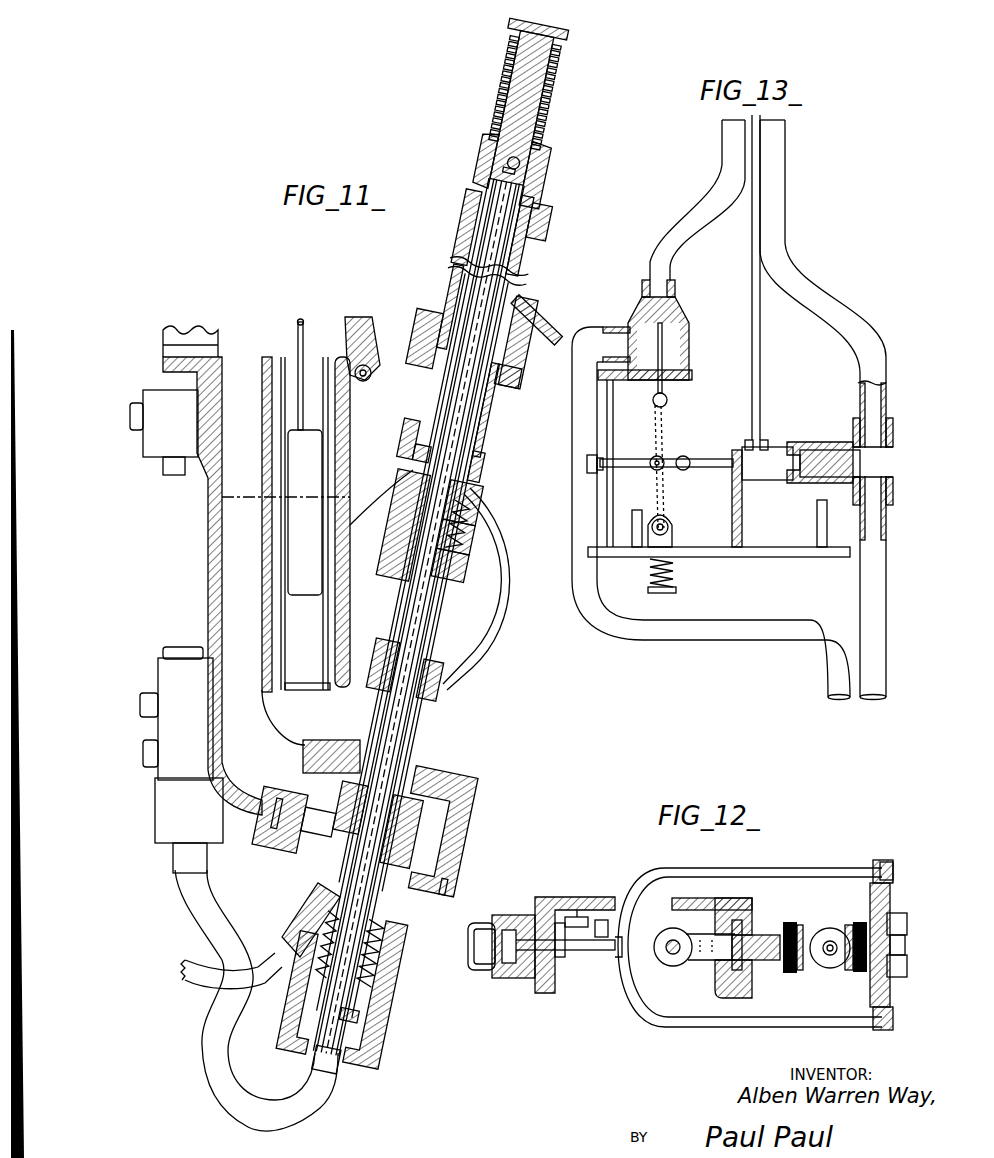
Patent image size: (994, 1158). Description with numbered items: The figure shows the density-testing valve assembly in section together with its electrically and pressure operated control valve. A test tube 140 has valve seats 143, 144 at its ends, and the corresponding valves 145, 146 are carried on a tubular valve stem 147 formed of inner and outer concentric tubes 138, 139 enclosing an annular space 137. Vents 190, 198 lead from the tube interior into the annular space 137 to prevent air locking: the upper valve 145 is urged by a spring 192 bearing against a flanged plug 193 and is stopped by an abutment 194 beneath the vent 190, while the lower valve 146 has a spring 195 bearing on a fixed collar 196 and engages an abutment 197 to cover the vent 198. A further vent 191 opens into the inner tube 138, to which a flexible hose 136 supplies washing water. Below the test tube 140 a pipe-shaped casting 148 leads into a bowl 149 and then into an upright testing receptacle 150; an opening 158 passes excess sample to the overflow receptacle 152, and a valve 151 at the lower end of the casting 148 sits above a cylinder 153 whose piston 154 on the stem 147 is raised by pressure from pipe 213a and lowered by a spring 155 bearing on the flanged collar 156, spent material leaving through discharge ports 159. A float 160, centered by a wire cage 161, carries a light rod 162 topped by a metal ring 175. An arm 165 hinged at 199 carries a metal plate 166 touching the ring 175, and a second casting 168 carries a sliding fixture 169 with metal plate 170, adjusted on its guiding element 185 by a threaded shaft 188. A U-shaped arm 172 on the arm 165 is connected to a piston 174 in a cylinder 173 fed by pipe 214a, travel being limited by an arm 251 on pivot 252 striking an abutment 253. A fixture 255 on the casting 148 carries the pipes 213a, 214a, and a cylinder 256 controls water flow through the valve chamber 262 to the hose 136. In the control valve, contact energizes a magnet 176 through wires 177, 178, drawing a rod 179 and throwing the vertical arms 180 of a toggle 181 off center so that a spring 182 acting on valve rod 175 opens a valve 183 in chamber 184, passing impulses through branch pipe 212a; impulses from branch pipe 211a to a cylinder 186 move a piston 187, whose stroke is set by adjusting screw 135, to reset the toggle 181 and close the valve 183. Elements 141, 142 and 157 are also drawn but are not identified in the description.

In FIG. 13, the adjusting screw 135 is at (587, 466).
In FIG. 11, the flexible hose 136 is at (208, 900).
In FIG. 11, the annular space 137 is at (530, 236).
In FIG. 11, the inner tube 138 is at (520, 268).
In FIG. 11, the outer tube 139 is at (525, 293).
In FIG. 11, the test tube 140 is at (500, 428).
In FIG. 11, the clamp block 141 is at (528, 341).
In FIG. 11, the sleeve 142 is at (445, 278).
In FIG. 11, the valve seat 143 is at (545, 205).
In FIG. 11, the valve seat 144 is at (478, 490).
In FIG. 11, the valve 145 is at (552, 157).
In FIG. 11, the valve 146 is at (478, 505).
In FIG. 11, the valve stem 147 is at (500, 400).
In FIG. 11, the casting 148 is at (190, 575).
In FIG. 11, the bowl 149 is at (331, 738).
In FIG. 11, the testing receptacle 150 is at (338, 465).
In FIG. 11, the valve 151 is at (445, 689).
In FIG. 11, the overflow receptacle 152 is at (215, 536).
In FIG. 11, the cylinder 153 is at (342, 794).
In FIG. 11, the piston 154 is at (417, 820).
In FIG. 11, the spring 155 is at (370, 960).
In FIG. 11, the collar 156 is at (350, 1017).
In FIG. 11, the flange 157 is at (445, 778).
In FIG. 11, the opening 158 is at (264, 476).
In FIG. 11, the discharge ports 159 is at (312, 842).
In FIG. 11, the float 160 is at (296, 438).
In FIG. 12, the float 160 is at (890, 910).
In FIG. 11, the wire cage 161 is at (283, 405).
In FIG. 11, the rod 162 is at (298, 332).
In FIG. 12, the rod 162 is at (830, 955).
In FIG. 11, the arm 165 is at (358, 316).
In FIG. 12, the arm 165 is at (885, 882).
In FIG. 12, the metal plate 166 is at (858, 920).
In FIG. 11, the second casting 168 is at (196, 328).
In FIG. 12, the second casting 168 is at (698, 1002).
In FIG. 12, the sliding fixture 169 is at (660, 955).
In FIG. 12, the metal plate 170 is at (795, 920).
In FIG. 12, the U-shaped arm 172 is at (725, 868).
In FIG. 12, the cylinder 173 is at (472, 962).
In FIG. 12, the piston 174 is at (505, 978).
In FIG. 13, the metal ring 175 is at (662, 349).
In FIG. 12, the metal ring 175 is at (830, 928).
In FIG. 13, the magnet 176 is at (776, 488).
In FIG. 13, the wire 177 is at (764, 392).
In FIG. 13, the wire 178 is at (749, 392).
In FIG. 13, the rod 179 is at (716, 456).
In FIG. 13, the vertical arms 180 is at (662, 445).
In FIG. 13, the toggle 181 is at (672, 478).
In FIG. 13, the spring 182 is at (675, 573).
In FIG. 13, the valve 183 is at (676, 300).
In FIG. 13, the chamber 184 is at (690, 322).
In FIG. 12, the guiding element 185 is at (750, 900).
In FIG. 13, the cylinder 186 is at (828, 442).
In FIG. 13, the piston 187 is at (805, 452).
In FIG. 12, the threaded shaft 188 is at (675, 956).
In FIG. 11, the vent 190 is at (495, 175).
In FIG. 11, the vent 191 is at (490, 152).
In FIG. 11, the spring 192 is at (556, 92).
In FIG. 11, the plug 193 is at (560, 28).
In FIG. 11, the abutment 194 is at (466, 205).
In FIG. 11, the spring 195 is at (480, 520).
In FIG. 11, the collar 196 is at (476, 548).
In FIG. 11, the abutment 197 is at (422, 440).
In FIG. 11, the vent 198 is at (415, 445).
In FIG. 11, the hinge 199 is at (422, 355).
In FIG. 13, the branch pipe 211a is at (862, 585).
In FIG. 13, the branch pipe 212a is at (594, 331).
In FIG. 11, the pipe 213a is at (279, 954).
In FIG. 12, the pipe 214a is at (544, 918).
In FIG. 12, the arm 251 is at (577, 903).
In FIG. 12, the pivot 252 is at (577, 955).
In FIG. 12, the abutment 253 is at (603, 918).
In FIG. 11, the fixture 255 is at (164, 432).
In FIG. 11, the cylinder 256 is at (183, 647).
In FIG. 11, the valve chamber 262 is at (181, 765).